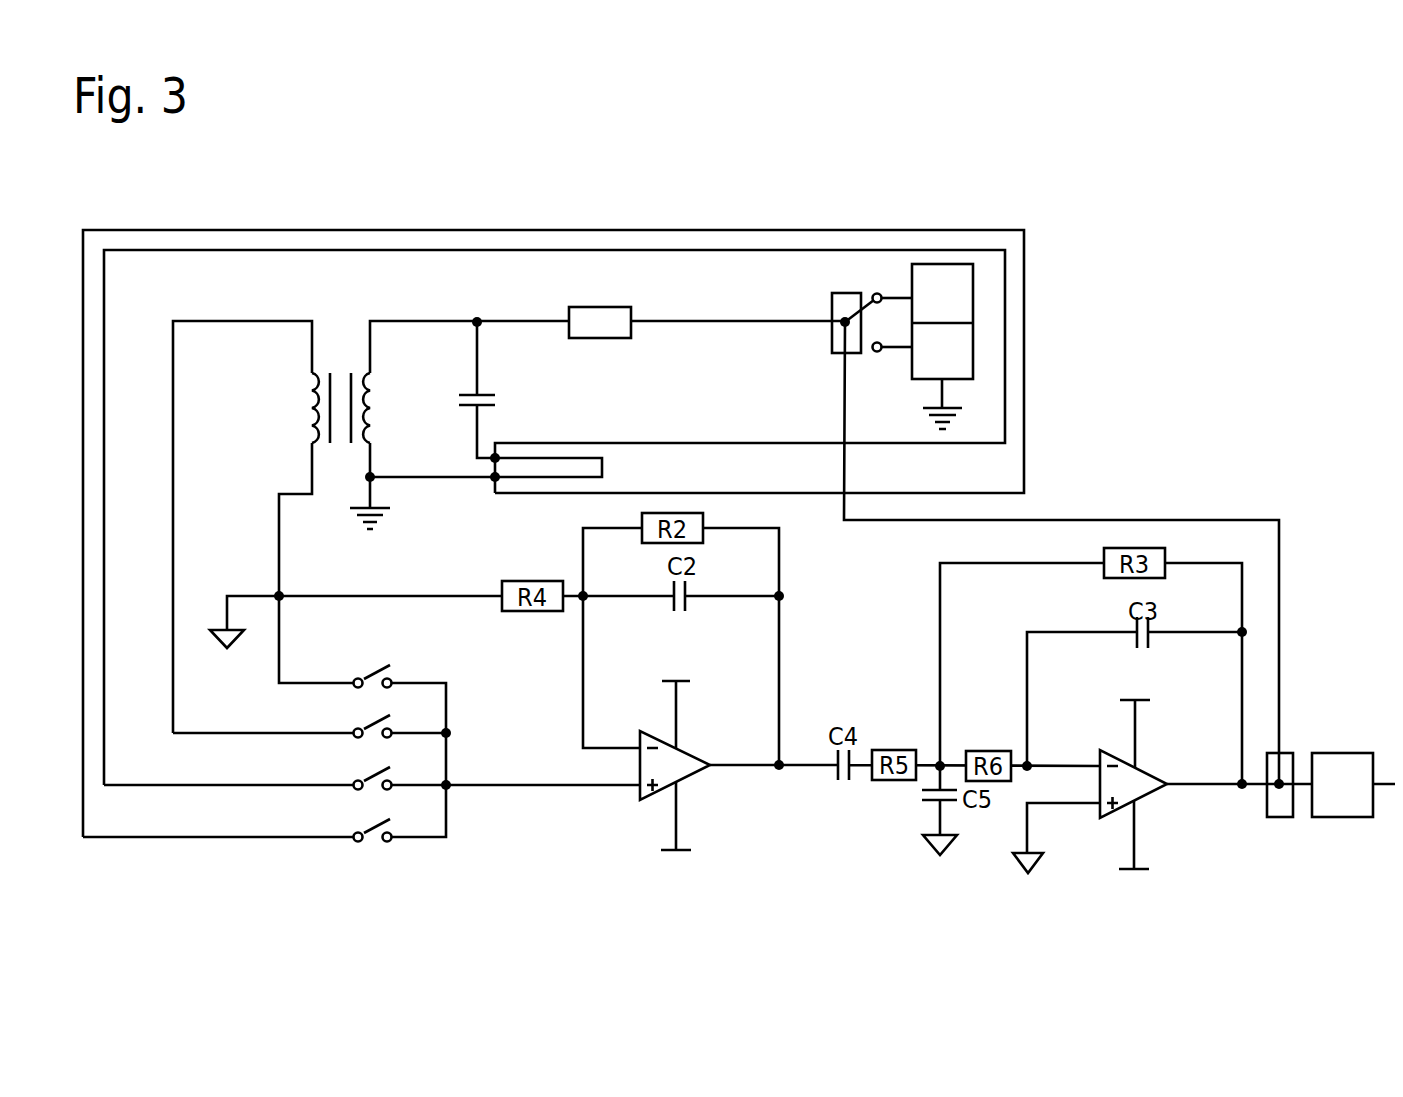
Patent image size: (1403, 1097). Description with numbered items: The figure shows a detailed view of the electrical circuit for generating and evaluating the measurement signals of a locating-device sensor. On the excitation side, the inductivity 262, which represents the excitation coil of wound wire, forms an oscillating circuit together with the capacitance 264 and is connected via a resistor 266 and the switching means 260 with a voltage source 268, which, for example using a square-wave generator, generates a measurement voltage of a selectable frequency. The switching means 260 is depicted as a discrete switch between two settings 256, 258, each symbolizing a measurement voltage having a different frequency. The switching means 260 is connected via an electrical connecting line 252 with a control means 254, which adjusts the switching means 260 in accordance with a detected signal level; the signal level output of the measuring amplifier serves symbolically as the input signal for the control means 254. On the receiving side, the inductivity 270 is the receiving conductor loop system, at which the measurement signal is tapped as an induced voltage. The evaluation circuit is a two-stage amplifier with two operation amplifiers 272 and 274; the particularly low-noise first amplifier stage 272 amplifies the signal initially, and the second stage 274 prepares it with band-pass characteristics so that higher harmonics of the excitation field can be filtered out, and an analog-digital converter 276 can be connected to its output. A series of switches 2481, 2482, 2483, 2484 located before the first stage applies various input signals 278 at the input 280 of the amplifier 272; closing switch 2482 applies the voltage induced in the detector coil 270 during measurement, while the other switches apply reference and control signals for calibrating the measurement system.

The electrical connecting line 252 is at (1183, 507).
The control means 254 is at (1282, 805).
The switch setting 256 is at (885, 343).
The switch setting 258 is at (880, 295).
The switching means 260 is at (842, 306).
The inductivity 262 is at (382, 380).
The capacitance 264 is at (493, 383).
The resistor 266 is at (626, 311).
The voltage source 268 is at (952, 288).
The inductivity 270 is at (302, 383).
The operation amplifier 272 is at (682, 773).
The operation amplifier 274 is at (1100, 815).
The analog-digital converter 276 is at (1340, 800).
The input signals 278 is at (310, 683).
The input 280 is at (544, 800).
The switch 2481 is at (402, 670).
The switch 2482 is at (402, 720).
The switch 2483 is at (402, 770).
The switch 2484 is at (402, 822).